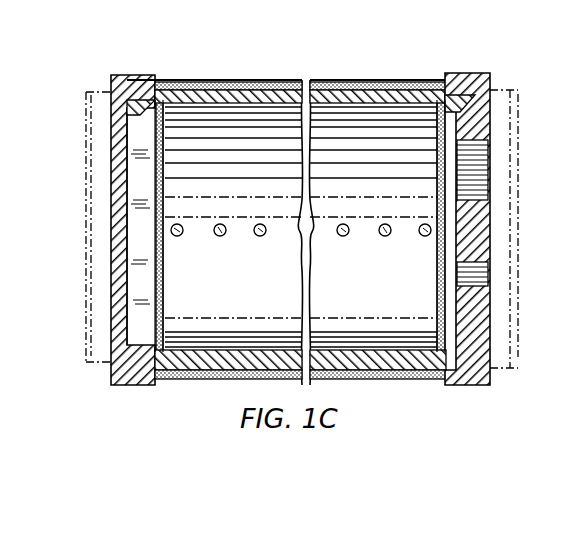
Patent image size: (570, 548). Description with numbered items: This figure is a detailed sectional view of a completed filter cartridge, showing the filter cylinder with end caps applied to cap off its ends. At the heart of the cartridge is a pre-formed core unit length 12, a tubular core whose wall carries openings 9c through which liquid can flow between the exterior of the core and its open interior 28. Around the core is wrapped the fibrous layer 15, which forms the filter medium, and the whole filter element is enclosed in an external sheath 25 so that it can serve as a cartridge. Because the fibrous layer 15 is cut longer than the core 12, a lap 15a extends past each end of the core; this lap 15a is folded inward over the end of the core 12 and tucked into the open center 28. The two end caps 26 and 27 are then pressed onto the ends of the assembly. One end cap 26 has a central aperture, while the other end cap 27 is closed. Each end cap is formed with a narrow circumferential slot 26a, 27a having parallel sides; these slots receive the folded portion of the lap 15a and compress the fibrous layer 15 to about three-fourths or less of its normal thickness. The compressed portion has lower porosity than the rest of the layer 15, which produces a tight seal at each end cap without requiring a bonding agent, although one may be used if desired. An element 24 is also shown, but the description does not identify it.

The end cap 27 is at (112, 77).
The circumferential slot 27a is at (132, 98).
The core unit length 12 is at (238, 84).
The fibrous layer 15 is at (345, 86).
The external sheath 25 is at (372, 82).
The end cap 26 is at (490, 76).
The circumferential slot 26a is at (478, 96).
The end cap insert 24 is at (480, 188).
The lap 15a is at (440, 170).
The openings 9c is at (346, 104).
The open interior 28 is at (262, 186).